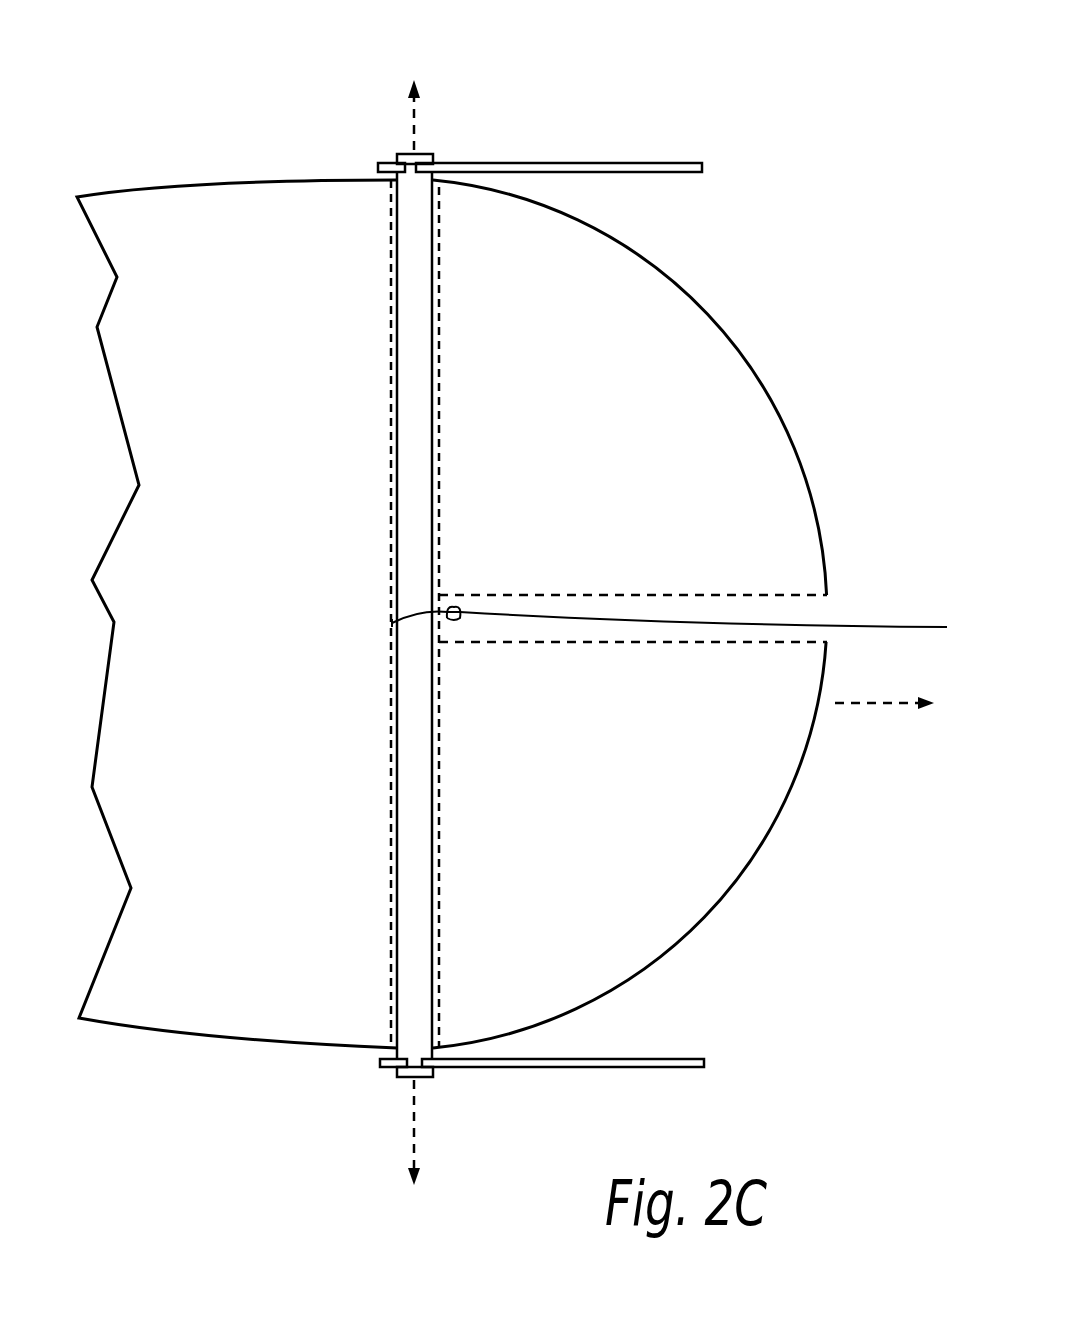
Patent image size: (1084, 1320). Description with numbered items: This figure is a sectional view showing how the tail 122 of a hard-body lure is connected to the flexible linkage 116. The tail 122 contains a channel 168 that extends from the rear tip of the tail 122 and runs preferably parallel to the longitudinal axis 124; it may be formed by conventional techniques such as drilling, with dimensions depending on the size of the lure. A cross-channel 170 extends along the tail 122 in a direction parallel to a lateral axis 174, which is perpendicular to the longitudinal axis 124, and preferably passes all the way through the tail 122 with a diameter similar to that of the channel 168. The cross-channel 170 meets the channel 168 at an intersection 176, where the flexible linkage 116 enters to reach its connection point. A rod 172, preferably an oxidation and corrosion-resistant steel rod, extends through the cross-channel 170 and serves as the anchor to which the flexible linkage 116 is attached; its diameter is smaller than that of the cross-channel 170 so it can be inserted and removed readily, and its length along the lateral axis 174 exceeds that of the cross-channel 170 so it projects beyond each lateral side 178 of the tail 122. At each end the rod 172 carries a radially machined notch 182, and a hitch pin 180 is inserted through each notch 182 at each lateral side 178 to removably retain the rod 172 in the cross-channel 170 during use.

The flexible linkage 116 is at (847, 628).
The tail 122 is at (237, 176).
The longitudinal axis 124 is at (852, 700).
The channel 168 is at (834, 609).
The cross-channel 170 is at (455, 352).
The rod 172 is at (412, 124).
The lateral axis 174 is at (415, 1118).
The intersection 176 is at (447, 630).
The lateral side 178 is at (439, 84).
The hitch pin 180 is at (612, 163).
The notch 182 is at (386, 156).